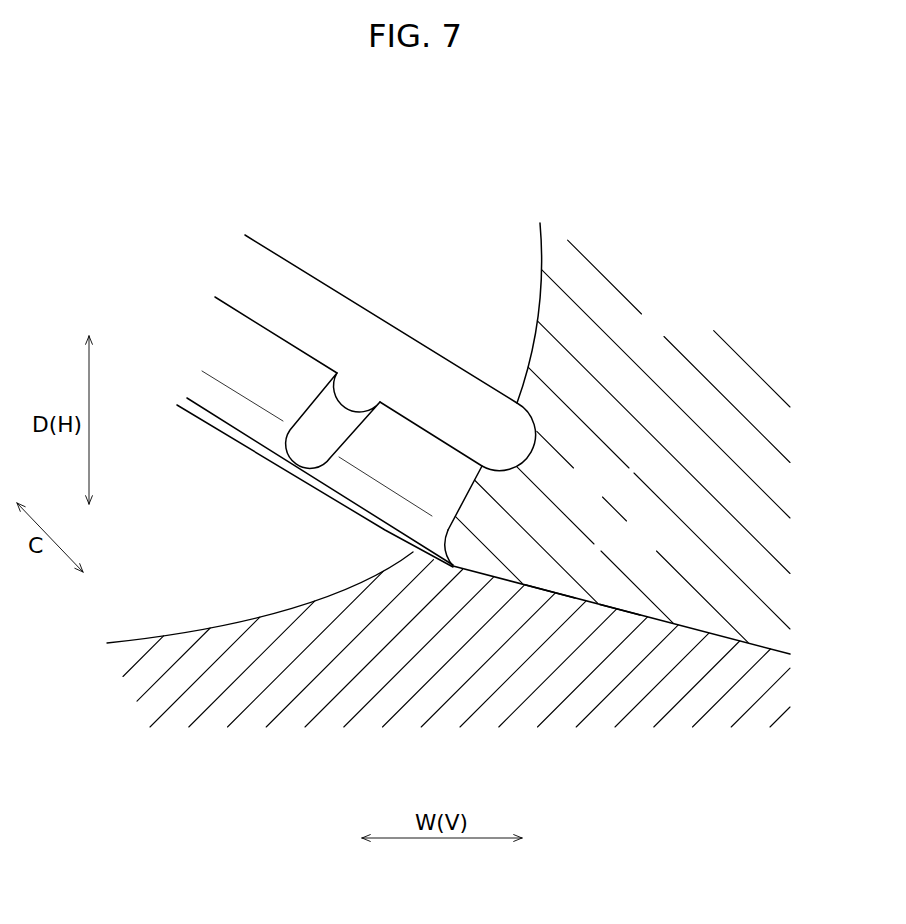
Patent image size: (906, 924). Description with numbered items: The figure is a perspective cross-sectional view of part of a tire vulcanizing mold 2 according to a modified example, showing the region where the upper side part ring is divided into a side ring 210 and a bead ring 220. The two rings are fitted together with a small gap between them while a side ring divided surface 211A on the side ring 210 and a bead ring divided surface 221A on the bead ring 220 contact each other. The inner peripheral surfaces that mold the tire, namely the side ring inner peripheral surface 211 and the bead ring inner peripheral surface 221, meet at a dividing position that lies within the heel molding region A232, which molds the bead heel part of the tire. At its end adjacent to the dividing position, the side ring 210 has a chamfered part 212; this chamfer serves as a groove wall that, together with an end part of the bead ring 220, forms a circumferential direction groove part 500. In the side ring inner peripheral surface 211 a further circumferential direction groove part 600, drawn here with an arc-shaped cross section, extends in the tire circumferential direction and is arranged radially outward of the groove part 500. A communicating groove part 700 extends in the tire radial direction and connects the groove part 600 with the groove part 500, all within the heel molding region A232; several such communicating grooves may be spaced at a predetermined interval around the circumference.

The tire vulcanizing mold 2 is at (725, 192).
The side ring 210 is at (710, 410).
The side ring inner peripheral surface 211 is at (525, 340).
The side ring divided surface 211A is at (633, 618).
The chamfered part 212 is at (452, 551).
The heel molding region A232 is at (480, 490).
The bead ring 220 is at (667, 693).
The bead ring inner peripheral surface 221 is at (263, 610).
The bead ring divided surface 221A is at (537, 583).
The circumferential direction groove part 500 is at (432, 542).
The circumferential direction groove part 600 is at (443, 393).
The communicating groove part 700 is at (315, 427).